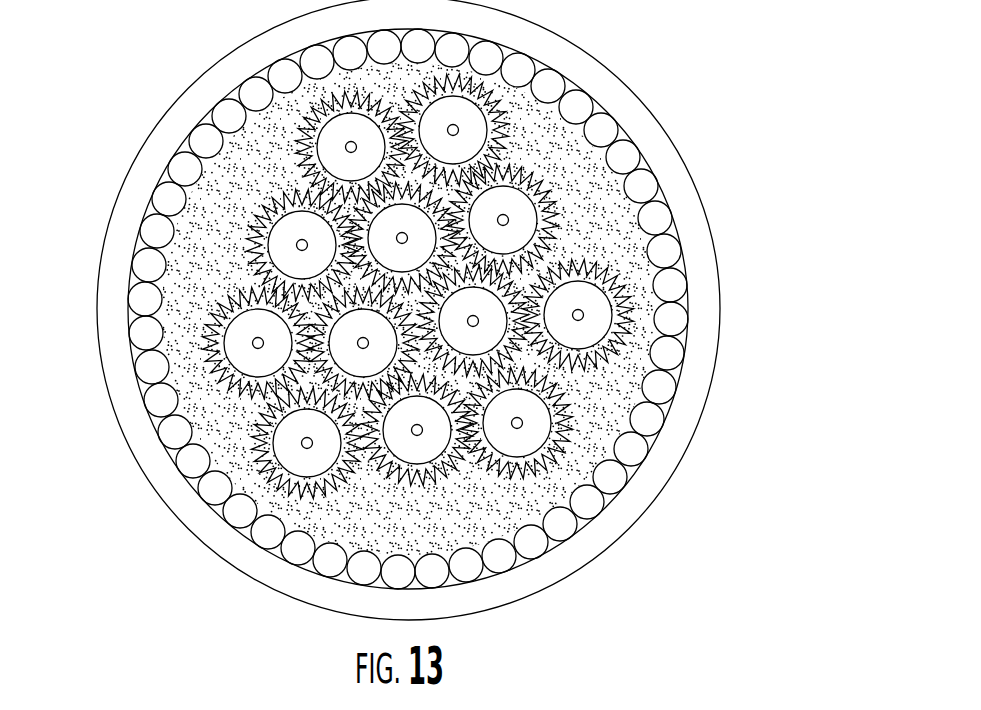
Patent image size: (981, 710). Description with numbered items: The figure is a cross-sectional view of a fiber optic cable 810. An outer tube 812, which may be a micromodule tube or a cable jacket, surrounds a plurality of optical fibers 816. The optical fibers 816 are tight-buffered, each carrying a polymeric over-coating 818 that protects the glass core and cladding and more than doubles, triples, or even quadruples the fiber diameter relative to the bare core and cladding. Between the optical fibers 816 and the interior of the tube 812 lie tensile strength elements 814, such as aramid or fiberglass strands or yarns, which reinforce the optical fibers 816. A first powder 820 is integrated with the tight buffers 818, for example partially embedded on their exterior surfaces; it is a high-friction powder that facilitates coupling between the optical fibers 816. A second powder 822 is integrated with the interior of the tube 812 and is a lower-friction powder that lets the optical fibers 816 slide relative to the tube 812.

The fiber optic cable 810 is at (740, 112).
The tube 812 is at (702, 340).
The tensile strength elements 814 is at (607, 218).
The optical fibers 816 is at (585, 314).
The polymeric over-coating 818 is at (502, 446).
The first powder 820 is at (186, 447).
The second powder 822 is at (153, 400).